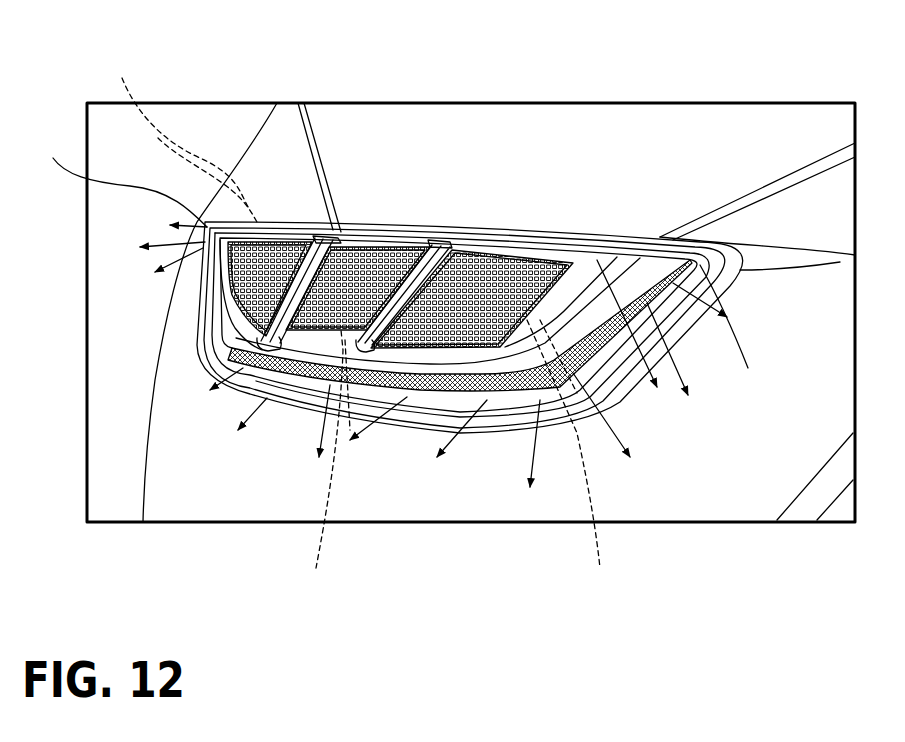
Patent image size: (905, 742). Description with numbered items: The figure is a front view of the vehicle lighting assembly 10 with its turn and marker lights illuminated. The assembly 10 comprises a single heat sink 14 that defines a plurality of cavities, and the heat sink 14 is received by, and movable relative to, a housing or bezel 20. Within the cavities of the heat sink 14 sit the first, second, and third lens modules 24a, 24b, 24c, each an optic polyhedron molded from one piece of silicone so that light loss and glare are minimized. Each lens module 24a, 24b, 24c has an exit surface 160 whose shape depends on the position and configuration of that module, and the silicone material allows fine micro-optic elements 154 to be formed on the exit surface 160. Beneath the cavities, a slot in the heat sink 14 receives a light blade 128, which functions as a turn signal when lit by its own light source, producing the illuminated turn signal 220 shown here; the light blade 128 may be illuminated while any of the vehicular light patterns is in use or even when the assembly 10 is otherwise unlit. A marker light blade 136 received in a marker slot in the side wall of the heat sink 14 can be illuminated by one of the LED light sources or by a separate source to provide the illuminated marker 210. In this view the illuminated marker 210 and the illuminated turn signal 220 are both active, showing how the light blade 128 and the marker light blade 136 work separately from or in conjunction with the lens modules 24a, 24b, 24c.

The vehicle lighting assembly 10 is at (718, 160).
The heat sink 14 is at (603, 290).
The housing 20 is at (580, 377).
The first lens module 24a is at (278, 248).
The second lens module 24b is at (353, 263).
The third lens module 24c is at (472, 273).
The light blade 128 is at (705, 268).
The marker light blade 136 is at (118, 178).
The micro-optic elements 154 is at (360, 323).
The exit surface 160 is at (287, 257).
The illuminated marker 210 is at (177, 238).
The illuminated turn signal 220 is at (668, 357).